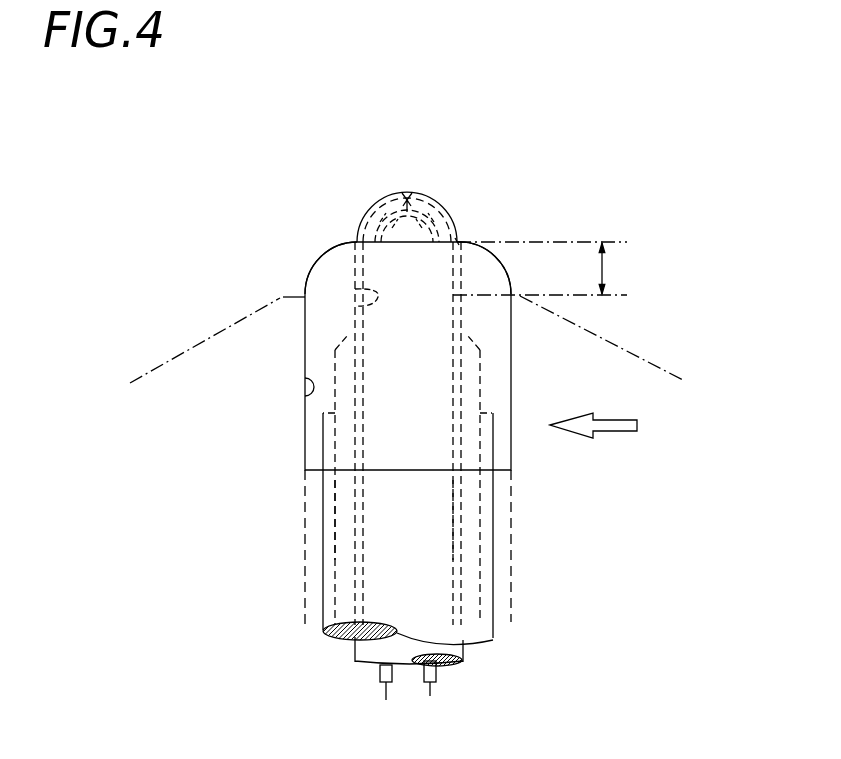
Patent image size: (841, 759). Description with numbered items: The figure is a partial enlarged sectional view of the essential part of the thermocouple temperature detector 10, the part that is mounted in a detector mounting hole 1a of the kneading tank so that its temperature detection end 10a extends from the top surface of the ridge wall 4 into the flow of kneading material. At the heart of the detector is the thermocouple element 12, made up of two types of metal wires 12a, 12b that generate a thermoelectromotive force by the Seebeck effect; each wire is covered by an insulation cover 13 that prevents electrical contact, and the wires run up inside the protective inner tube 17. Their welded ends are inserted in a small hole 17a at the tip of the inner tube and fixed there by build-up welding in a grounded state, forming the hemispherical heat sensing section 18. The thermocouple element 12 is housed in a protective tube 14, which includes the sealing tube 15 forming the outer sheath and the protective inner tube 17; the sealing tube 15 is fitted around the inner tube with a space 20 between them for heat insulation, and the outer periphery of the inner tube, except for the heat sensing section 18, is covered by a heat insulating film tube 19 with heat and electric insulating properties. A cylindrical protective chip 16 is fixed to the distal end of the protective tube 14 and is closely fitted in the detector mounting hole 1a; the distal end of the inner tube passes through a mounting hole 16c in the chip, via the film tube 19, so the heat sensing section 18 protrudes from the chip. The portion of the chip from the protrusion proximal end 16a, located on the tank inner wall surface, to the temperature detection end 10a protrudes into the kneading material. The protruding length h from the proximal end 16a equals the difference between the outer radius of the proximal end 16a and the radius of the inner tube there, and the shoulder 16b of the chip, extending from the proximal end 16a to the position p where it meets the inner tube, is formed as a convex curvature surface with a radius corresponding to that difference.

The ridge wall 4 is at (283, 297).
The protective chip 16 is at (265, 365).
The protrusion proximal end 16a is at (304, 295).
The shoulder 16b is at (497, 258).
The mounting hole 16c is at (366, 303).
The protective inner tube 17 is at (455, 492).
The small hole 17a is at (406, 192).
The heat sensing section 18 is at (430, 197).
The position p is at (458, 241).
The thermocouple temperature detector 10 is at (616, 431).
The temperature detection end 10a is at (532, 262).
The protruding length h is at (616, 268).
The detector mounting hole 1a is at (305, 393).
The protective tube 14 is at (290, 494).
The sealing tube 15 is at (493, 580).
The heat insulating film tube 19 is at (462, 537).
The space 20 is at (343, 543).
The thermocouple element 12 is at (462, 678).
The metal wire 12a is at (385, 688).
The metal wire 12b is at (428, 688).
The insulation cover 13 is at (378, 671).